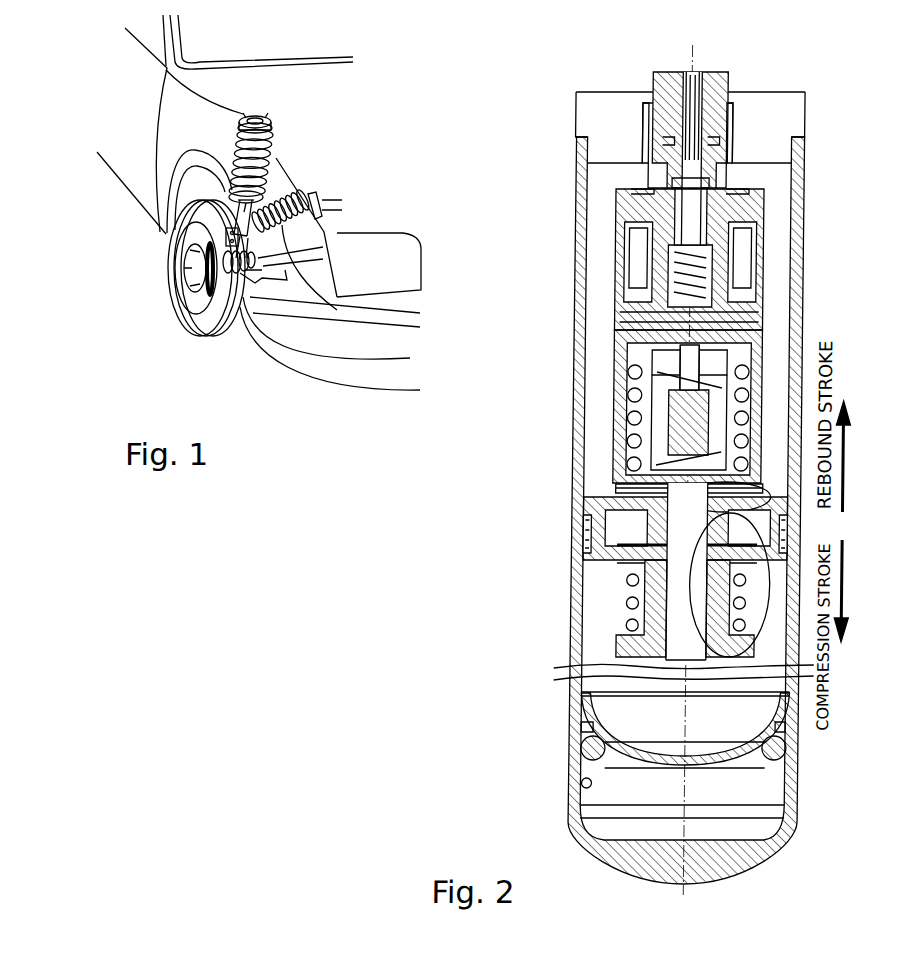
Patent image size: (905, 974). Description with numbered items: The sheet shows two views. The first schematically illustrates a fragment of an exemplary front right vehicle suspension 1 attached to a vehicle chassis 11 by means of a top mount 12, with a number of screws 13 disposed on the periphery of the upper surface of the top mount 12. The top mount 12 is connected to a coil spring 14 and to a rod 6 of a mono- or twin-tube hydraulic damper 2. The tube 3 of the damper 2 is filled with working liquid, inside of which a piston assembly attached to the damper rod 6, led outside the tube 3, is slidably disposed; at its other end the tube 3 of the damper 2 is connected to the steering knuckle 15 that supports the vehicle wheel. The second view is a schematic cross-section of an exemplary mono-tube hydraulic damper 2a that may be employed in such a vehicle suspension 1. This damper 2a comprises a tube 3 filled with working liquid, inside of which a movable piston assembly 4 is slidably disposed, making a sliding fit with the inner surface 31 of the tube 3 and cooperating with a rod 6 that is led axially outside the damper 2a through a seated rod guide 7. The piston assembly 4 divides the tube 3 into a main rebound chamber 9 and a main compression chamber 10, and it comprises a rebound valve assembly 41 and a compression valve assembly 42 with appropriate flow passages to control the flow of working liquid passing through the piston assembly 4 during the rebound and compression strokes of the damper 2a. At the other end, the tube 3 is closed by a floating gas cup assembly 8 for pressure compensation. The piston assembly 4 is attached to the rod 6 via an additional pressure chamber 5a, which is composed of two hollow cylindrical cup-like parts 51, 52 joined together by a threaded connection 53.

In FIG. 1, the vehicle suspension 1 is at (282, 188).
In FIG. 1, the hydraulic damper 2 is at (228, 190).
In FIG. 2, the hydraulic damper 2a is at (551, 574).
In FIG. 1, the tube 3 is at (228, 178).
In FIG. 2, the tube 3 is at (576, 757).
In FIG. 2, the piston assembly 4 is at (627, 527).
In FIG. 2, the additional pressure chamber 5a is at (630, 336).
In FIG. 1, the rod 6 is at (268, 163).
In FIG. 2, the rod 6 is at (662, 87).
In FIG. 2, the rod guide 7 is at (628, 103).
In FIG. 2, the floating gas cup assembly 8 is at (583, 728).
In FIG. 2, the main rebound chamber 9 is at (623, 173).
In FIG. 2, the main compression chamber 10 is at (598, 663).
In FIG. 1, the vehicle chassis 11 is at (157, 98).
In FIG. 1, the top mount 12 is at (268, 130).
In FIG. 1, the screws 13 is at (272, 115).
In FIG. 1, the coil spring 14 is at (270, 144).
In FIG. 1, the steering knuckle 15 is at (226, 236).
In FIG. 2, the inner surface 31 is at (585, 784).
In FIG. 2, the rebound valve assembly 41 is at (685, 604).
In FIG. 2, the compression valve assembly 42 is at (625, 490).
In FIG. 2, the cup-like part 51 is at (615, 240).
In FIG. 2, the cup-like part 52 is at (620, 432).
In FIG. 2, the threaded connection 53 is at (625, 372).